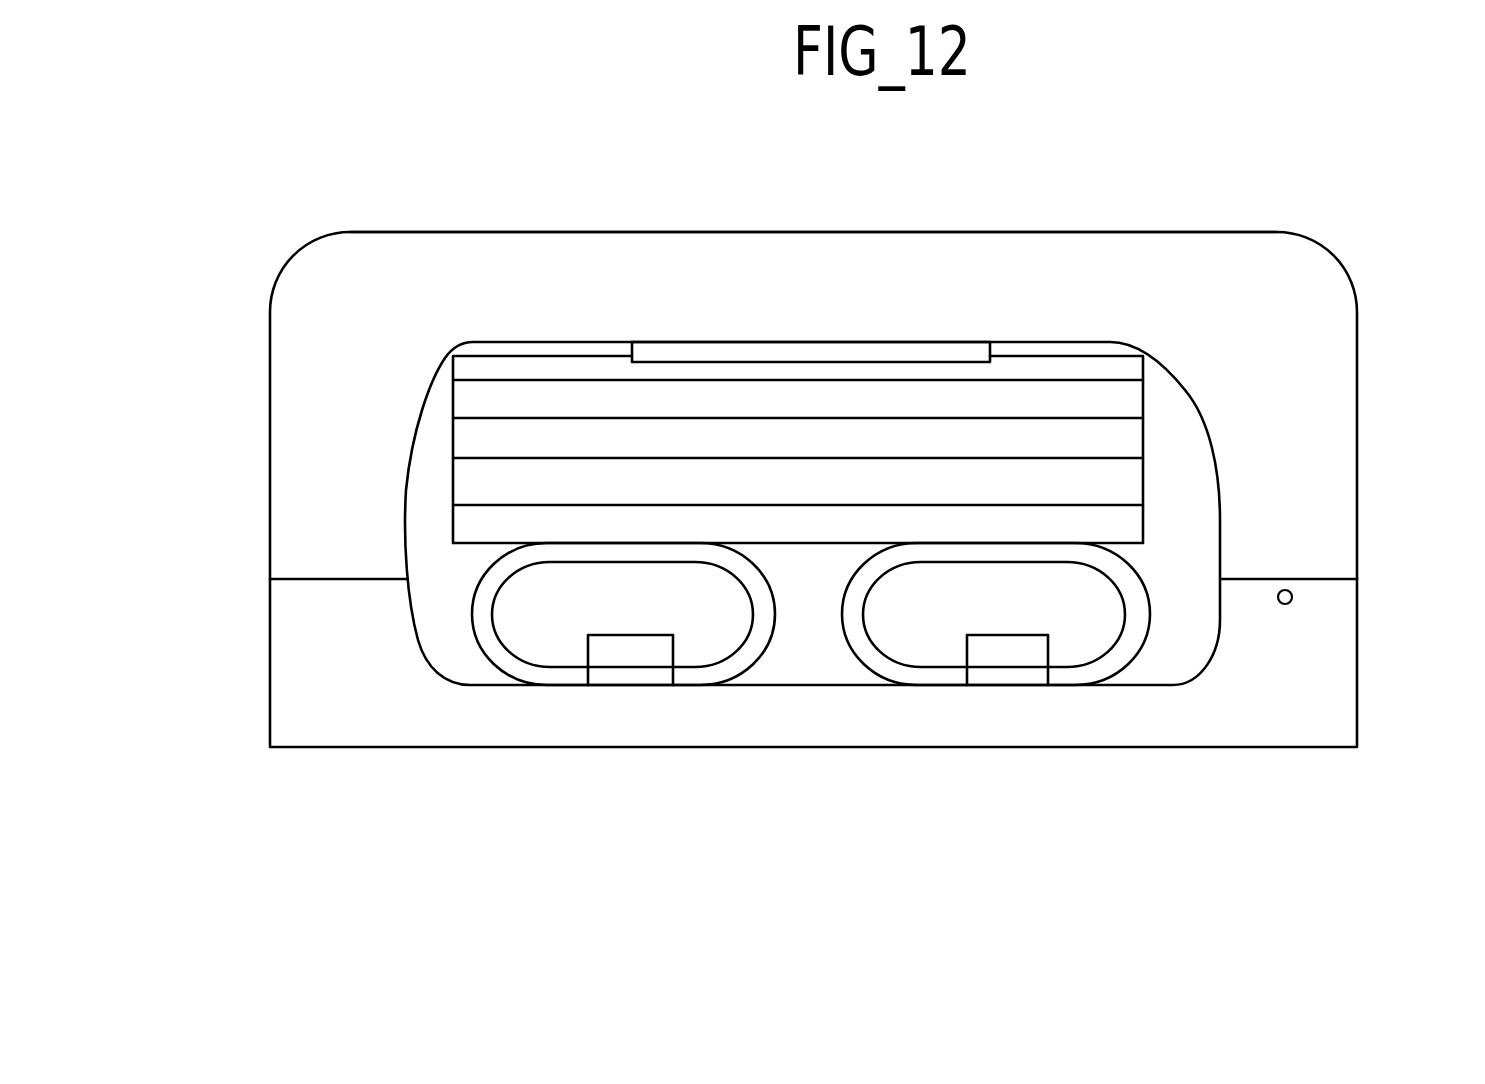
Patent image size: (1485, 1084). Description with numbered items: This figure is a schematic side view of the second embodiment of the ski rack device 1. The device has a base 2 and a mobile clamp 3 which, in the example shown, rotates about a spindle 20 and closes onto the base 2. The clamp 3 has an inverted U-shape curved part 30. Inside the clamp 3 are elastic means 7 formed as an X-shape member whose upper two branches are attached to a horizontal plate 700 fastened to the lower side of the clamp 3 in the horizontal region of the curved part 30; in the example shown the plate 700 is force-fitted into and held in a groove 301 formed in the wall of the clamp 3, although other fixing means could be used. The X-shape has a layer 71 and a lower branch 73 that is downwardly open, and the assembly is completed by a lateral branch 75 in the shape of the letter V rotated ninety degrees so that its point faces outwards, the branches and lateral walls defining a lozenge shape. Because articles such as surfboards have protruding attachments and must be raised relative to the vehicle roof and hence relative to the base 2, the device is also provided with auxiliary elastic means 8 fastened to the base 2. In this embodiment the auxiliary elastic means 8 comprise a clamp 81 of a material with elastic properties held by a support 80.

The connector device 1 is at (549, 170).
The base 2 is at (443, 757).
The mobile clamp 3 is at (827, 225).
The elastic means 7 is at (1176, 447).
The auxiliary elastic means 8 is at (847, 661).
The spindle 20 is at (1292, 596).
The inverted U-shape curved part 30 is at (1118, 259).
The upper stack layer 71 is at (465, 396).
The lower branch 73 is at (462, 527).
The lateral branch 75 is at (462, 436).
The support 80 is at (625, 673).
The clamp 81 is at (697, 673).
The groove 301 is at (931, 350).
The horizontal plate 700 is at (1120, 363).